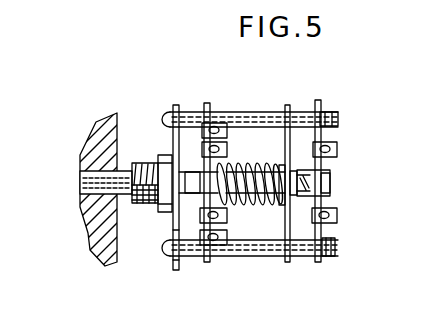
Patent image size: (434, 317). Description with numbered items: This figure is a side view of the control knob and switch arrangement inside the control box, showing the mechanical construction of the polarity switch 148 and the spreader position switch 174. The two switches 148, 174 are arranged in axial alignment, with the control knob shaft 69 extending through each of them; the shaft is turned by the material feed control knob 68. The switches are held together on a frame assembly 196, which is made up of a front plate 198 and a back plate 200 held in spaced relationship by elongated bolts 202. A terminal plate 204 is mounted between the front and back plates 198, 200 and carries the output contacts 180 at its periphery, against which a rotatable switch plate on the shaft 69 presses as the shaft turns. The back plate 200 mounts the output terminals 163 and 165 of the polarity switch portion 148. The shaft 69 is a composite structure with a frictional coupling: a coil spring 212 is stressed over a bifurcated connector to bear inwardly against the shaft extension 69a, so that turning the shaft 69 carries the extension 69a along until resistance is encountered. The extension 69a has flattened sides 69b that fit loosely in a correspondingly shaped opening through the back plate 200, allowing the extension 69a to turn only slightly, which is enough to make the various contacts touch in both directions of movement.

The material feed control knob 68 is at (110, 126).
The control knob shaft 69 is at (78, 181).
The shaft extension 69a is at (332, 183).
The flattened sides 69b is at (303, 190).
The polarity switch 148 is at (319, 101).
The output terminal 163 is at (338, 152).
The output terminal 165 is at (338, 216).
The spreader position switch 174 is at (205, 103).
The output contacts 180 is at (204, 105).
The frame assembly 196 is at (268, 159).
The front plate 198 is at (170, 233).
The back plate 200 is at (324, 231).
The elongated bolts 202 is at (300, 66).
The terminal plate 204 is at (202, 162).
The coil spring 212 is at (274, 202).